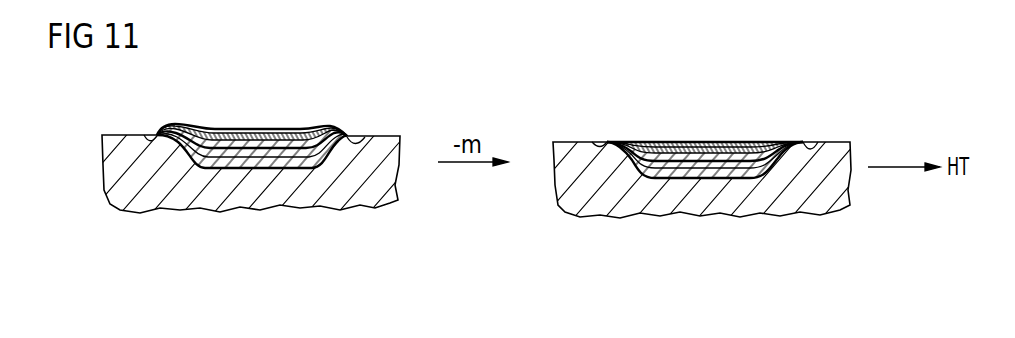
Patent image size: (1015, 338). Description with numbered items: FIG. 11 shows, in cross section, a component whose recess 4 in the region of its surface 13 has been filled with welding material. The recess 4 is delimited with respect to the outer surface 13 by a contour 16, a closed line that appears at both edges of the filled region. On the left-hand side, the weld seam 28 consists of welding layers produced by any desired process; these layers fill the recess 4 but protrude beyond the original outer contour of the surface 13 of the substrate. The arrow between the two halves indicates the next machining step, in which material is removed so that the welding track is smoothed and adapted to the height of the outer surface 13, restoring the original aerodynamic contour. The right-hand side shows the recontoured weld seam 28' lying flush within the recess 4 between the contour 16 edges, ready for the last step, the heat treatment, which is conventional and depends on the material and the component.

The recess 4 is at (258, 171).
The surface 13 is at (349, 137).
The contour 16 is at (146, 135).
The weld seam 28 is at (252, 120).
The weld seam after recontouring 28' is at (703, 125).